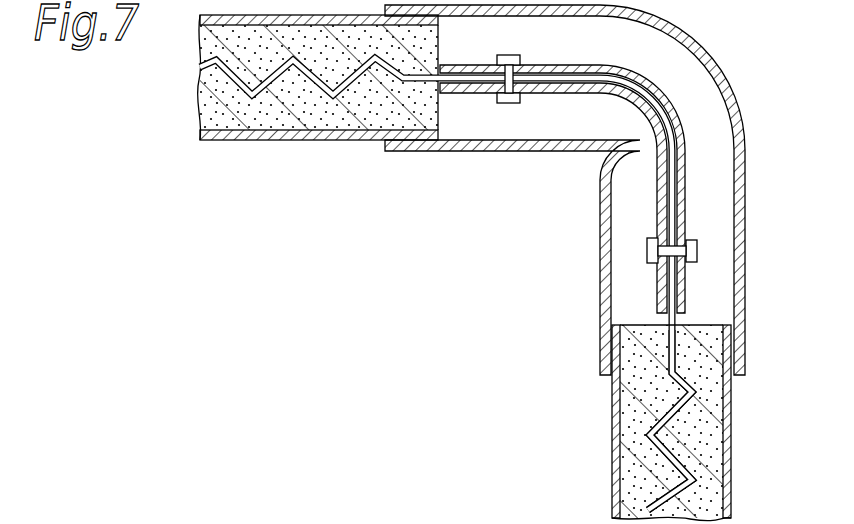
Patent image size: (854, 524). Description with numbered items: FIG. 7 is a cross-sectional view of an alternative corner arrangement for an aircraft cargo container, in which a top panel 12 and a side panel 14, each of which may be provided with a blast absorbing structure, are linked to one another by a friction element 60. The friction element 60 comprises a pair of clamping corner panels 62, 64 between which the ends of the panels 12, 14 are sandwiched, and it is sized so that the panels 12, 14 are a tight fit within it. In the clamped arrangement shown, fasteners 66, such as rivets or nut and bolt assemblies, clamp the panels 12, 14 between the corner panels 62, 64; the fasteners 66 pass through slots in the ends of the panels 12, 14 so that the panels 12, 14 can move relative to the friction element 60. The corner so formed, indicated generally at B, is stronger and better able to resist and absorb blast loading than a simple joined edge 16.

The top panel 12 is at (418, 84).
The side panel 14 is at (678, 350).
The edge 16 is at (508, 104).
The friction element 60 is at (652, 94).
The clamping corner panel 62 is at (658, 147).
The clamping corner panel 64 is at (683, 173).
The fastener 66 is at (697, 252).
The corner region B is at (578, 174).